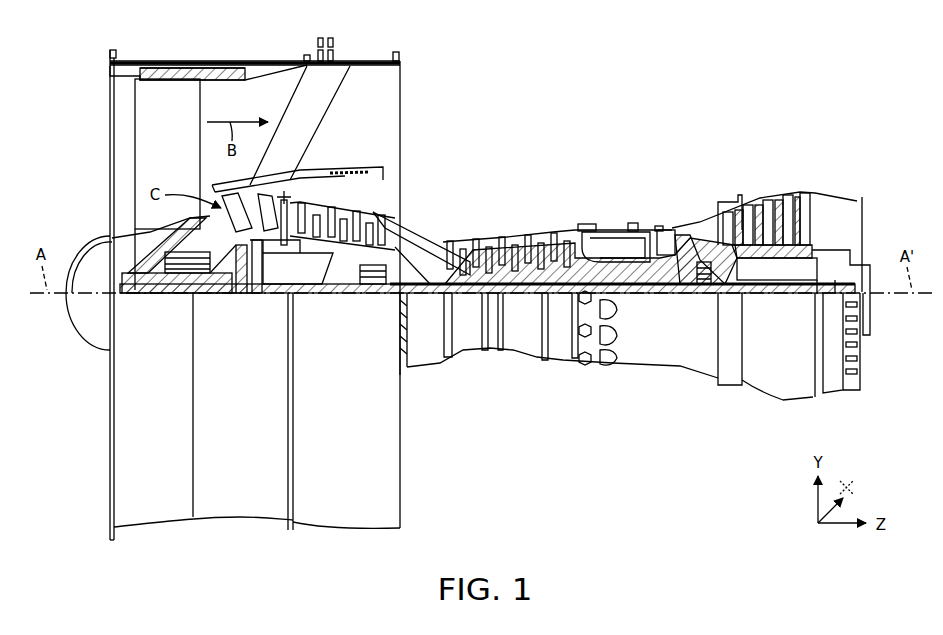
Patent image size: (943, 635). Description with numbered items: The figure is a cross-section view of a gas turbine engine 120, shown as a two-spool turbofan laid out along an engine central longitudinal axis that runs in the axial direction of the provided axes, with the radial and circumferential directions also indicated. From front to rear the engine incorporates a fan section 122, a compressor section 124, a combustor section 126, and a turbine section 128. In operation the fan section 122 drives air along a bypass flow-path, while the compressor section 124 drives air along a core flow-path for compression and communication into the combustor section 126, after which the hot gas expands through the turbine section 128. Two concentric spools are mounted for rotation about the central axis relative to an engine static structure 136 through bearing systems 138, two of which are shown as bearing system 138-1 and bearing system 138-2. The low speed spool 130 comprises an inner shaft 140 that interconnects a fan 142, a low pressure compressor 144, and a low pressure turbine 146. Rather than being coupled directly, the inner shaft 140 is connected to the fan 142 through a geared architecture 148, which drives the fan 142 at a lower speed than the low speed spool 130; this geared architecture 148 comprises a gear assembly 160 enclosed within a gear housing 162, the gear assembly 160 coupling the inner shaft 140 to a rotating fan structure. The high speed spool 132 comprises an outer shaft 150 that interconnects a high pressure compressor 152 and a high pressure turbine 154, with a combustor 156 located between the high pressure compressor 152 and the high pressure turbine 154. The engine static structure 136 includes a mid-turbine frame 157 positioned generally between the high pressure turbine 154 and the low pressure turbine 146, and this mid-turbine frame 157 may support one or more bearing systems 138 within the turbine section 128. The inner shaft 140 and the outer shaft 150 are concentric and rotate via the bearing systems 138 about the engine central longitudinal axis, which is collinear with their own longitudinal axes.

The gas turbine engine 120 is at (497, 70).
The fan section 122 is at (288, 46).
The compressor section 124 is at (295, 146).
The combustor section 126 is at (668, 146).
The turbine section 128 is at (822, 146).
The low speed spool 130 is at (528, 298).
The high speed spool 132 is at (556, 268).
The engine static structure 136 is at (560, 355).
The bearing system 138 is at (700, 290).
The bearing system 138-1 is at (176, 278).
The bearing system 138-2 is at (366, 285).
The inner shaft 140 is at (419, 300).
The fan 142 is at (214, 304).
The low pressure compressor 144 is at (348, 207).
The low pressure turbine 146 is at (767, 222).
The geared architecture 148 is at (263, 308).
The outer shaft 150 is at (622, 290).
The high pressure compressor 152 is at (507, 240).
The high pressure turbine 154 is at (668, 230).
The combustor 156 is at (612, 240).
The mid-turbine frame 157 is at (700, 262).
The gear assembly 160 is at (256, 292).
The gear housing 162 is at (266, 252).